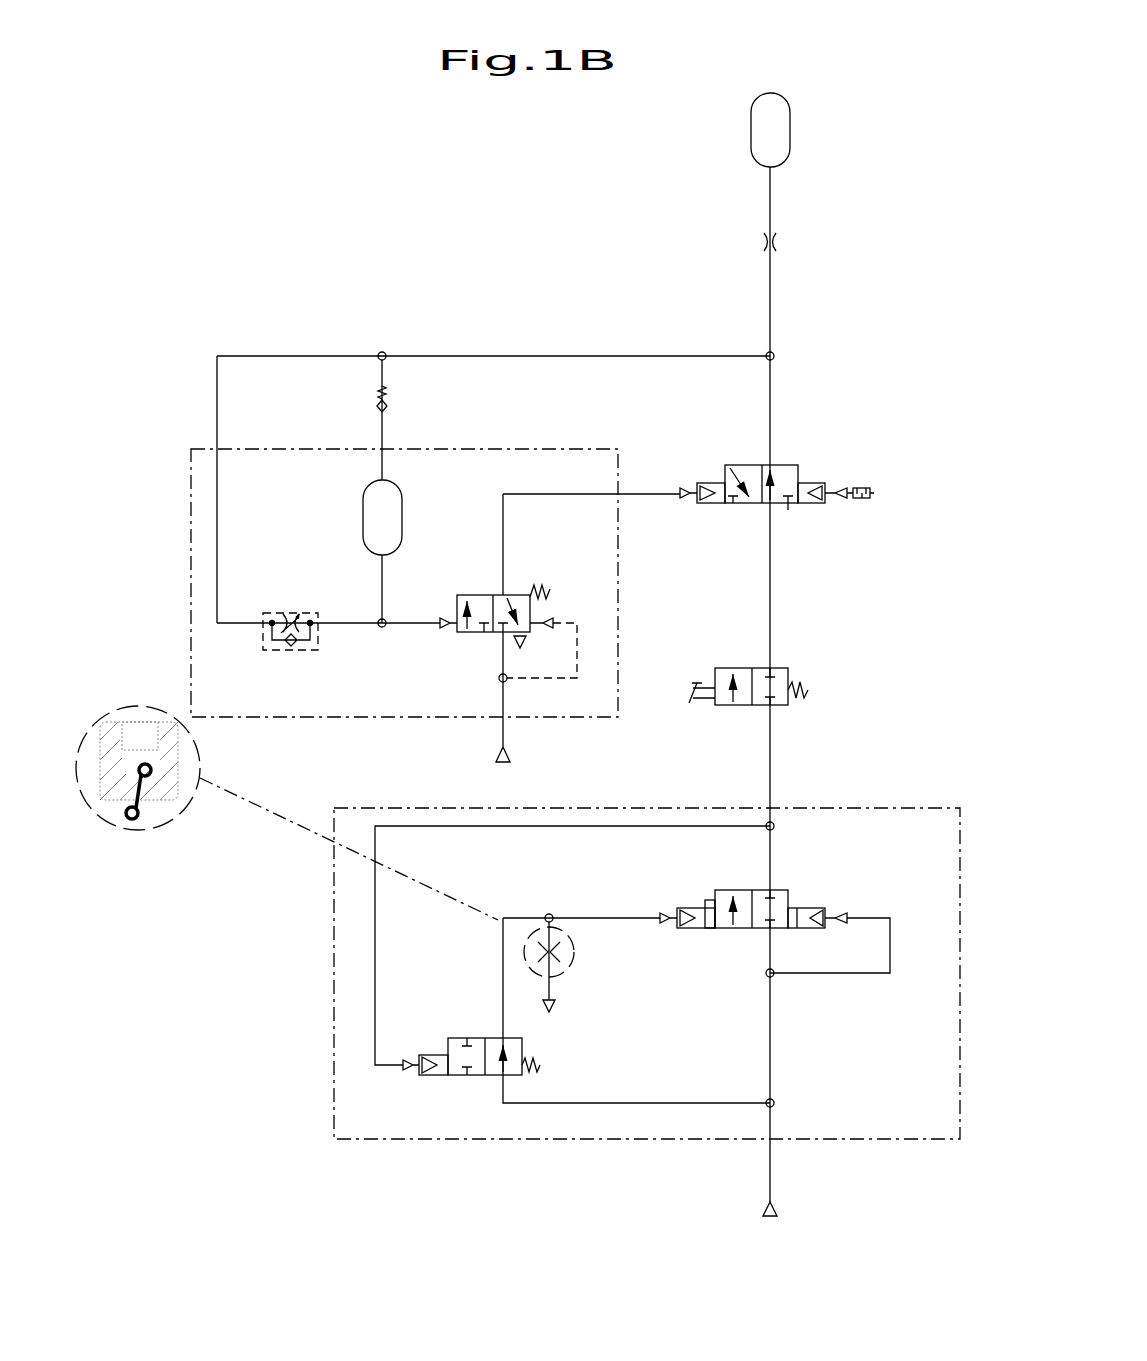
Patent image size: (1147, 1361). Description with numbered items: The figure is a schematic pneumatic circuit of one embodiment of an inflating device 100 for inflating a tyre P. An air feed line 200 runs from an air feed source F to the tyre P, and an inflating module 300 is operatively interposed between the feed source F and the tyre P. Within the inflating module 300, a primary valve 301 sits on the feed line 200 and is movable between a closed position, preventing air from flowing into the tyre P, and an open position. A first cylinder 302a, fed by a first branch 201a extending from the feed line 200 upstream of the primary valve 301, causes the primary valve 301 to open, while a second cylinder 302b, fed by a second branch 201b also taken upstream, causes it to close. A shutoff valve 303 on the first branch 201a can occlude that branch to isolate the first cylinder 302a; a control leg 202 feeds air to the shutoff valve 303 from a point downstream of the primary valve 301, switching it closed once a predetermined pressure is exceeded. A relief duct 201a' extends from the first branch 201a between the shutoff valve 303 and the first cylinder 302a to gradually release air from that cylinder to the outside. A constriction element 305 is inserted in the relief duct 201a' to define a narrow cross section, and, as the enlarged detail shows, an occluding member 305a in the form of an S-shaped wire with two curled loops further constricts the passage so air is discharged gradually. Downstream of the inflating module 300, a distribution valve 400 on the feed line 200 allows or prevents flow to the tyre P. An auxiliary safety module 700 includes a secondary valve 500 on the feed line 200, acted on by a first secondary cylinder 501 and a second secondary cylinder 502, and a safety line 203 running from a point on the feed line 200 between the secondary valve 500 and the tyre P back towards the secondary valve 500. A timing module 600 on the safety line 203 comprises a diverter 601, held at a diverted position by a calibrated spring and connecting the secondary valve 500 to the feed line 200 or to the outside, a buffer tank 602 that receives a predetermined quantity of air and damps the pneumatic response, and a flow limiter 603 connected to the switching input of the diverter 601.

The inflating device 100 is at (237, 267).
The air feed line 200 is at (773, 577).
The first branch 201a is at (636, 1076).
The relief duct 201a' is at (543, 963).
The second branch 201b is at (891, 945).
The control leg 202 is at (375, 927).
The safety line 203 is at (428, 356).
The inflating module 300 is at (333, 877).
The primary valve 301 is at (788, 888).
The first cylinder 302a is at (698, 908).
The second cylinder 302b is at (826, 891).
The shutoff valve 303 is at (452, 1087).
The constriction element 305 is at (118, 710).
The occluding member 305a is at (145, 810).
The distribution valve 400 is at (791, 672).
The secondary valve 500 is at (806, 468).
The first secondary cylinder 501 is at (716, 483).
The second secondary cylinder 502 is at (826, 483).
The timing module 600 is at (190, 515).
The diverter 601 is at (463, 634).
The buffer tank 602 is at (403, 497).
The flow limiter 603 is at (294, 652).
The auxiliary safety module 700 is at (137, 550).
The tyre P is at (790, 130).
The air feed source F is at (770, 1218).